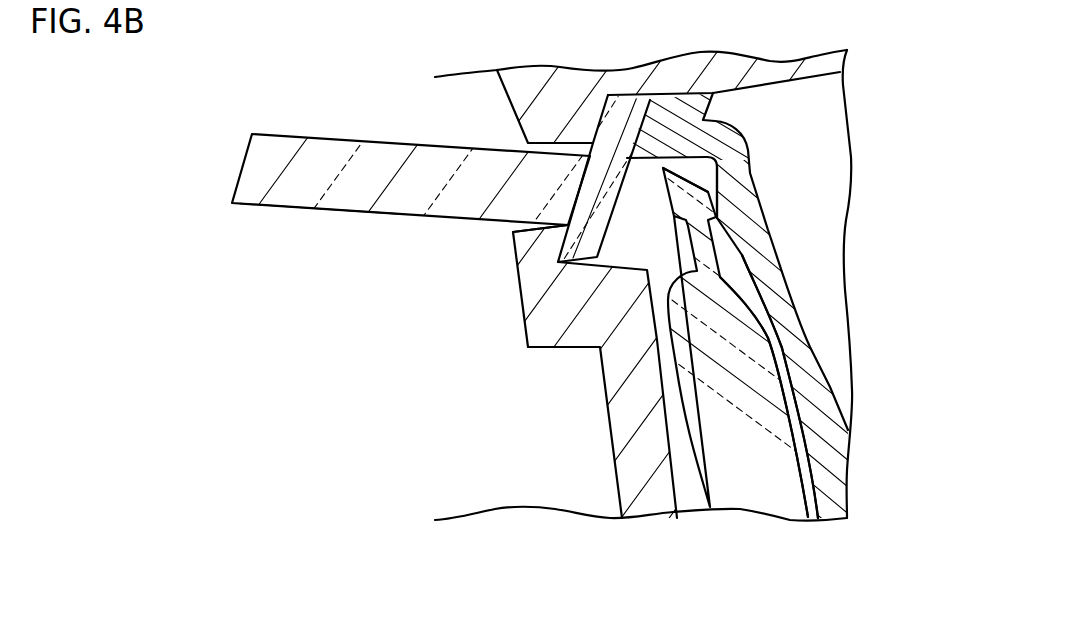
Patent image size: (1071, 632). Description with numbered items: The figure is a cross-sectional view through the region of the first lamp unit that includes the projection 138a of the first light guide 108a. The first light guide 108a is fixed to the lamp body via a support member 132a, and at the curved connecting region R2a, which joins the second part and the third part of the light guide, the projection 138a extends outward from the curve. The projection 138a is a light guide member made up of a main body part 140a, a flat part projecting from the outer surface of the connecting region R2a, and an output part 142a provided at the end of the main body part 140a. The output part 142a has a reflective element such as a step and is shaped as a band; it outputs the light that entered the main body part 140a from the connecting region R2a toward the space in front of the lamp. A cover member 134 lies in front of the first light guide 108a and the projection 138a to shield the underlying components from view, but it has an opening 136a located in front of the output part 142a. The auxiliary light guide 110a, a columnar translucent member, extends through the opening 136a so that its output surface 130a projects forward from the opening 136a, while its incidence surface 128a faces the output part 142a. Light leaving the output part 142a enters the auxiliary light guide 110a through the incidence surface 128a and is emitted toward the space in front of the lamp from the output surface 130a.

The output surface 130a is at (241, 165).
The auxiliary light guide 110a is at (302, 212).
The opening 136a is at (527, 222).
The incidence surface 128a is at (610, 216).
The projection 138a is at (663, 226).
The cover member 134 is at (615, 463).
The output part 142a is at (694, 178).
The support member 132a is at (762, 208).
The main body part 140a is at (718, 247).
The connecting region R2a is at (796, 484).
The first light guide 108a is at (753, 524).